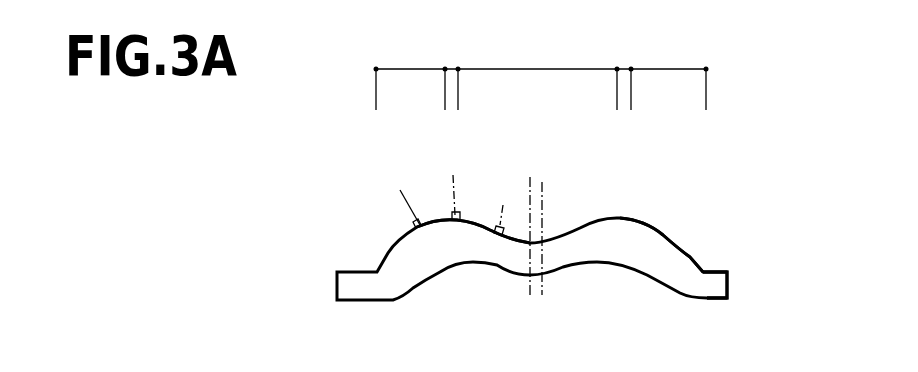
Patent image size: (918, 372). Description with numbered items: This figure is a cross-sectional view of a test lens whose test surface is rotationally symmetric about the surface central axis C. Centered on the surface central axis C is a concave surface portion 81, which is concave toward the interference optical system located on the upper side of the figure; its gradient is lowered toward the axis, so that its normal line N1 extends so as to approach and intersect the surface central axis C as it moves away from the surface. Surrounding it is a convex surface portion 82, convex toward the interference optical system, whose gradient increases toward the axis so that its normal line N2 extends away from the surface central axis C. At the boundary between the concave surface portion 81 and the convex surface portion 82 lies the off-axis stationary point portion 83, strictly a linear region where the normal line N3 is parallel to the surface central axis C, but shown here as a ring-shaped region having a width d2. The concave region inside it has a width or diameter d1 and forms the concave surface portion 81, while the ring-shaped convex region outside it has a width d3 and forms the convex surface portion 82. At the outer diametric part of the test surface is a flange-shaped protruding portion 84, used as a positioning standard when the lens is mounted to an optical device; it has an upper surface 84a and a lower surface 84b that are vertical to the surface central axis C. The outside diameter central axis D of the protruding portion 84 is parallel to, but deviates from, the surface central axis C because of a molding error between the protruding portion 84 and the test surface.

The concave surface portion 81 is at (576, 236).
The convex surface portion 82 is at (680, 241).
The off-axis stationary point portion 83 is at (627, 218).
The protruding portion 84 is at (729, 283).
The upper surface 84a is at (718, 268).
The lower surface 84b is at (713, 300).
The normal line of the concave surface portion N1 is at (503, 202).
The normal line of the convex surface portion N2 is at (399, 196).
The normal line of the off-axis stationary point portion N3 is at (453, 175).
The outside diameter central axis D is at (530, 180).
The surface central axis C is at (542, 186).
The width of the concave surface portion d1 is at (537, 51).
The width of the off-axis stationary point portion d2 is at (542, 51).
The width of the convex surface portion d3 is at (541, 51).